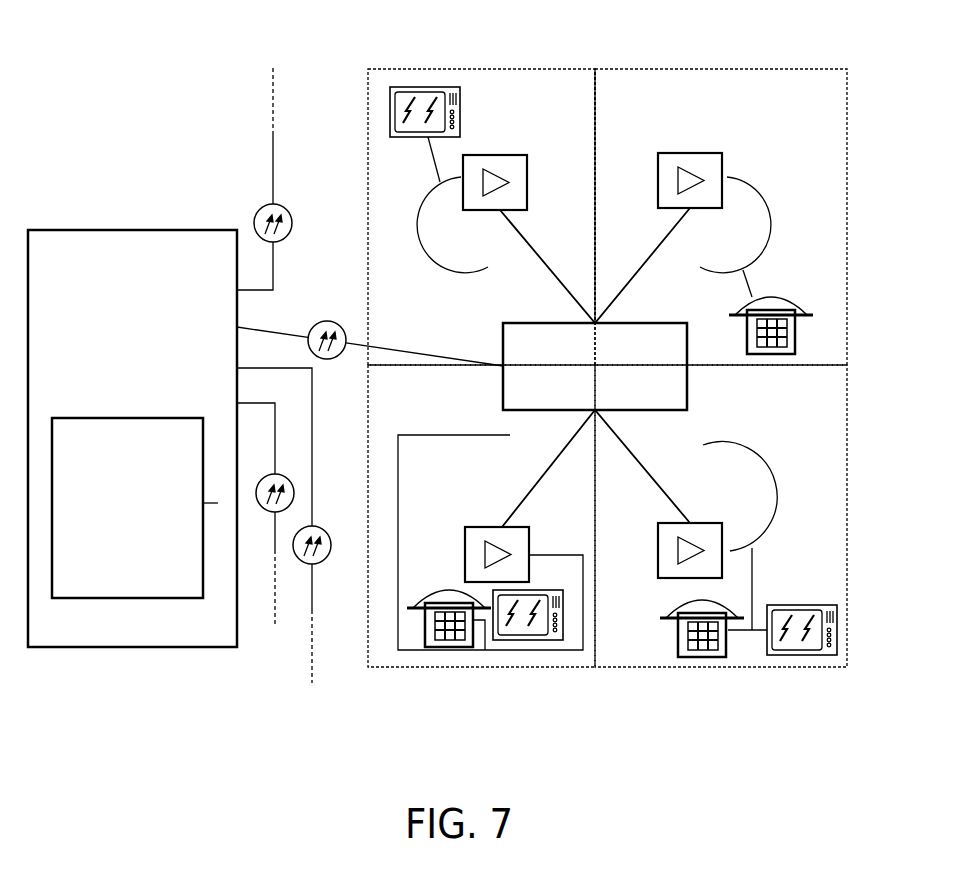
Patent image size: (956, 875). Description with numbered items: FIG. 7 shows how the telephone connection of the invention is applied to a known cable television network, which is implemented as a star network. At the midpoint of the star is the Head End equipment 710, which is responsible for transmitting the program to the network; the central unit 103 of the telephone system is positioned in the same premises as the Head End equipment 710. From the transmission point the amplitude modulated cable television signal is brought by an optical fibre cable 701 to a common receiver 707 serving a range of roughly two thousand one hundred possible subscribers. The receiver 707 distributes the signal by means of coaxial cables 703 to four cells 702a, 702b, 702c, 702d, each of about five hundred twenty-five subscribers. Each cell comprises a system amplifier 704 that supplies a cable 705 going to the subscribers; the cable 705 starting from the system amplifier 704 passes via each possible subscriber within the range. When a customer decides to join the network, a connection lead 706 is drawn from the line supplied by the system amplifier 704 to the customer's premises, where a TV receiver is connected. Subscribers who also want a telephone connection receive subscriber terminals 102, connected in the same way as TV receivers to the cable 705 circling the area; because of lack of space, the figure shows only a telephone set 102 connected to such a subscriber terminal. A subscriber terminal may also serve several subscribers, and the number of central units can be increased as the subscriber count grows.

The Head End equipment 710 is at (148, 231).
The central unit 103 is at (176, 418).
The optical fibre cable 701 is at (400, 350).
The cell 702a is at (456, 69).
The cell 702b is at (670, 69).
The cell 702c is at (441, 667).
The cell 702d is at (707, 667).
The common receiver 707 is at (664, 335).
The coaxial cable 703 is at (542, 252).
The system amplifier 704 is at (506, 165).
The cable 705 is at (456, 272).
The connection lead 706 is at (430, 160).
The subscriber terminal 102 is at (772, 304).